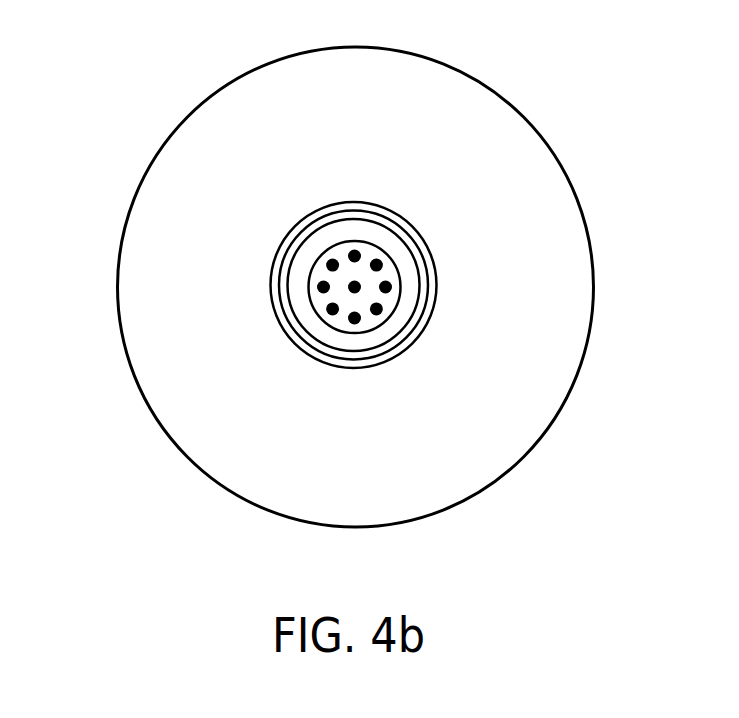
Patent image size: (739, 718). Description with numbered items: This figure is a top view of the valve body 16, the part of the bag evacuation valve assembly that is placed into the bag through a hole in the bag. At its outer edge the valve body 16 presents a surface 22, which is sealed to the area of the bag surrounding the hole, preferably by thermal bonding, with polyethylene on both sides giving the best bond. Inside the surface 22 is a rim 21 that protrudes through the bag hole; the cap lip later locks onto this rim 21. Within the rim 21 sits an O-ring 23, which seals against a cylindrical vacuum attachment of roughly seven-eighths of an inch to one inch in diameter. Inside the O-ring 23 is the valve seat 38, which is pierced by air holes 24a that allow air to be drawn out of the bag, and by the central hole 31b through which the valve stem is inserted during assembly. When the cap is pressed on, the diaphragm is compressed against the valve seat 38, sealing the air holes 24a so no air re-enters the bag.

The valve body 16 is at (487, 83).
The surface 22 is at (508, 262).
The rim 21 is at (277, 288).
The O-ring 23 is at (360, 343).
The hole 31b is at (352, 283).
The air holes 24a is at (331, 312).
The valve seat 38 is at (387, 300).